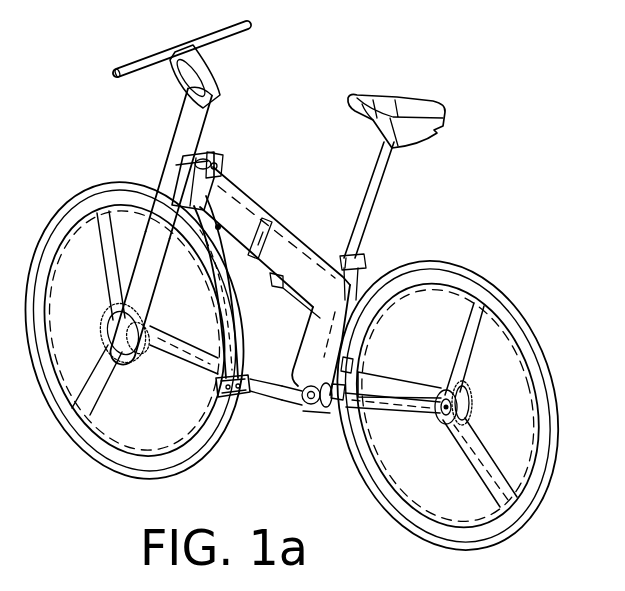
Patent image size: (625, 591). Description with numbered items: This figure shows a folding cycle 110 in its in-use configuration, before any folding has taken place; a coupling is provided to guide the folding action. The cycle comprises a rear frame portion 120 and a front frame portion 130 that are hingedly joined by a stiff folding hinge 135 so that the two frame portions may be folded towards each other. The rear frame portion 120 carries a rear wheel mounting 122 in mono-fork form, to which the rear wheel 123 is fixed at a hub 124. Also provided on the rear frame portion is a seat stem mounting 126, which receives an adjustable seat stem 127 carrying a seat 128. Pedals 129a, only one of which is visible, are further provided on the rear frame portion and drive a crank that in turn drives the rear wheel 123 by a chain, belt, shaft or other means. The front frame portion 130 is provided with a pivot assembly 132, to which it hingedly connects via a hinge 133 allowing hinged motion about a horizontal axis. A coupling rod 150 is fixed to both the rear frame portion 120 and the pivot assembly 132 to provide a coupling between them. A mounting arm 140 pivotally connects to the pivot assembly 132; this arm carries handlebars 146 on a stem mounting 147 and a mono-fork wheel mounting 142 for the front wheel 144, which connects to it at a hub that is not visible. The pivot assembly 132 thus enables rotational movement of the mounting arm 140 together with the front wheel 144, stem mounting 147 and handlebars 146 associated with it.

The folding cycle 110 is at (85, 130).
The rear frame portion 120 is at (313, 253).
The rear wheel mounting 122 is at (407, 387).
The rear wheel 123 is at (514, 310).
The hub 124 is at (440, 428).
The seat stem mounting 126 is at (367, 272).
The seat stem 127 is at (380, 163).
The seat 128 is at (419, 100).
The pedal 129a is at (244, 398).
The front frame portion 130 is at (253, 200).
The pivot assembly 132 is at (182, 182).
The hinge 133 is at (216, 158).
The stiff folding hinge 135 is at (267, 220).
The mounting arm 140 is at (190, 106).
The wheel mounting 142 is at (151, 288).
The front wheel 144 is at (207, 447).
The handlebars 146 is at (137, 63).
The stem mounting 147 is at (208, 63).
The coupling rod 150 is at (272, 276).